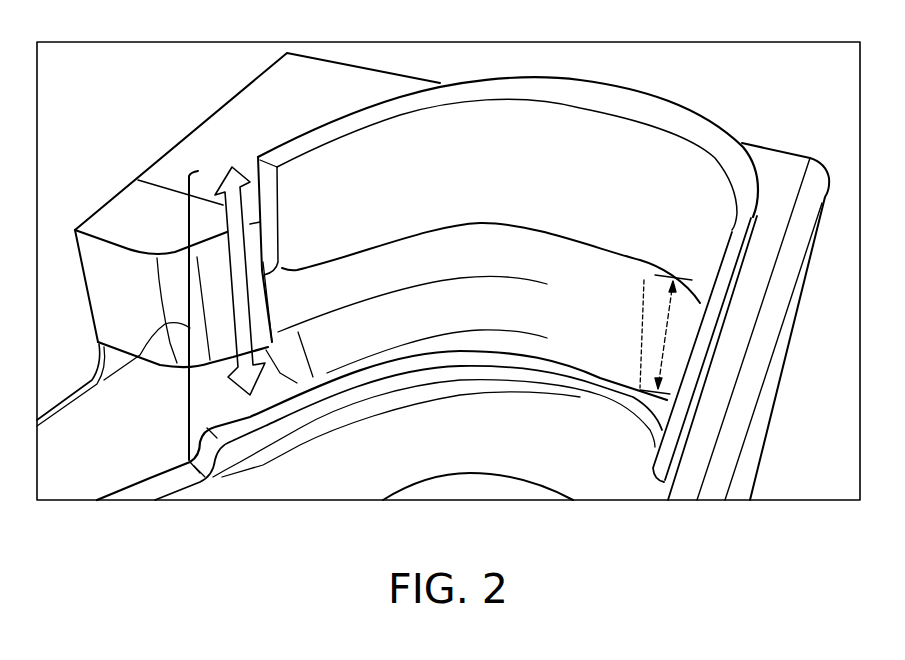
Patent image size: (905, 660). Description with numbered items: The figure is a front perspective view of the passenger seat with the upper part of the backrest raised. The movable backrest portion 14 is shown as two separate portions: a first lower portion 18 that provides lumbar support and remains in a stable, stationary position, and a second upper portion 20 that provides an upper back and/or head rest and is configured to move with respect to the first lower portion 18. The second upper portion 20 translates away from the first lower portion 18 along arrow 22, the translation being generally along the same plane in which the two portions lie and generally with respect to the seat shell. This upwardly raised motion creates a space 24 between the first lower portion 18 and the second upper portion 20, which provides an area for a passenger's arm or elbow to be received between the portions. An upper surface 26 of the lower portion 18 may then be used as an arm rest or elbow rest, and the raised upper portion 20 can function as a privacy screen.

The movable backrest portion 14 is at (97, 368).
The first lower portion 18 is at (607, 430).
The second upper portion 20 is at (713, 185).
The arrow 22 is at (236, 172).
The space 24 is at (670, 330).
The upper surface 26 is at (243, 427).